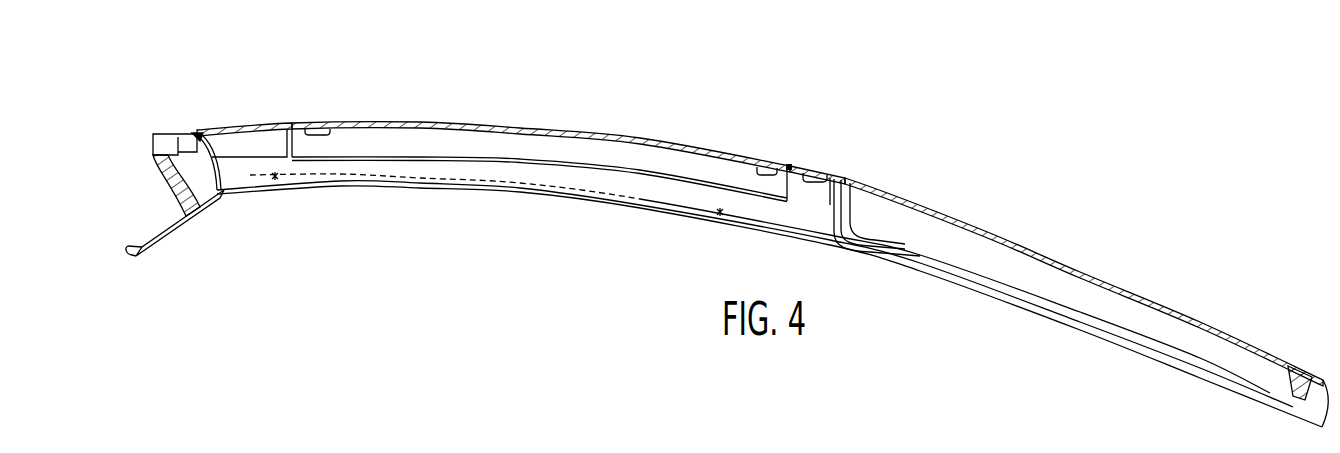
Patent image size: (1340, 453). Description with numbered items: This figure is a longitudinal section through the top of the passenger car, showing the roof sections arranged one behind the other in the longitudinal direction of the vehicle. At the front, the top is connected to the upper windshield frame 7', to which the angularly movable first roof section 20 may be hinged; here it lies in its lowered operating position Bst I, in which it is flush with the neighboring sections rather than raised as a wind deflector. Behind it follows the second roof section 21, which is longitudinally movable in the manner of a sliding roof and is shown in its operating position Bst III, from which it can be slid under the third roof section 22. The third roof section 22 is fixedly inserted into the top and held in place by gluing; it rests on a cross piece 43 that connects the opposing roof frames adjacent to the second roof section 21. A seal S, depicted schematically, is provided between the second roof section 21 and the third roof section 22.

The upper windshield frame 7' is at (175, 130).
The first roof section 20 is at (243, 122).
The second roof section 21 is at (697, 148).
The third roof section 22 is at (1075, 270).
The cross piece 43 is at (851, 185).
The seal S is at (839, 179).
The operating position Bst I is at (270, 115).
The operating position Bst III is at (476, 128).